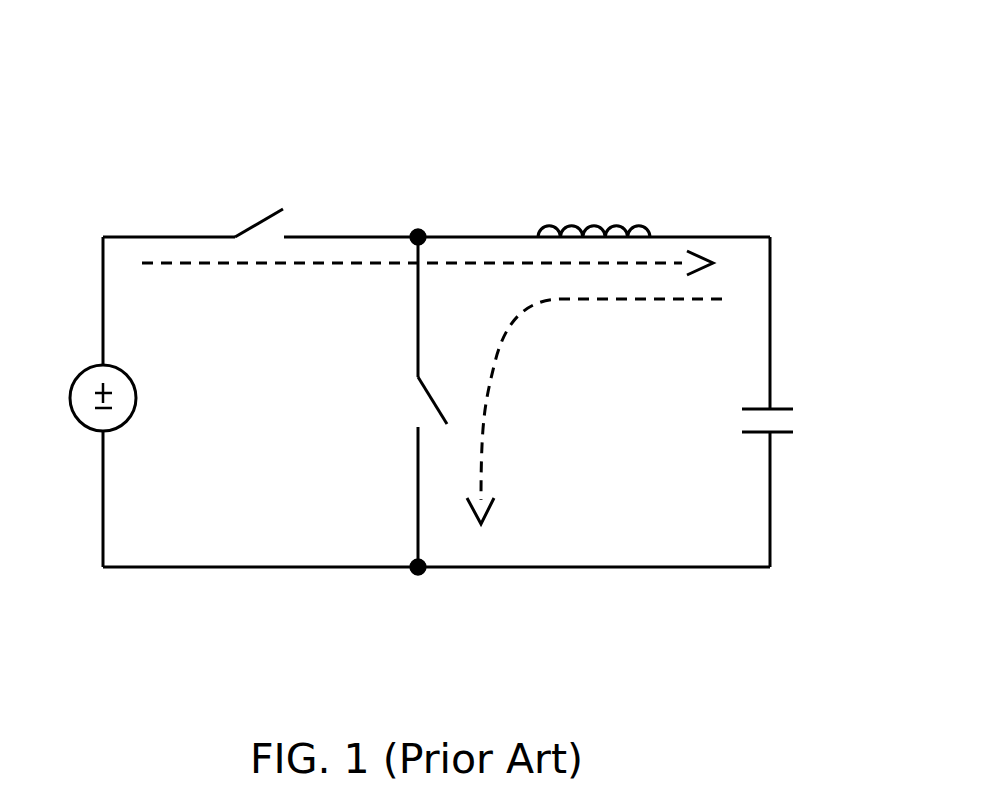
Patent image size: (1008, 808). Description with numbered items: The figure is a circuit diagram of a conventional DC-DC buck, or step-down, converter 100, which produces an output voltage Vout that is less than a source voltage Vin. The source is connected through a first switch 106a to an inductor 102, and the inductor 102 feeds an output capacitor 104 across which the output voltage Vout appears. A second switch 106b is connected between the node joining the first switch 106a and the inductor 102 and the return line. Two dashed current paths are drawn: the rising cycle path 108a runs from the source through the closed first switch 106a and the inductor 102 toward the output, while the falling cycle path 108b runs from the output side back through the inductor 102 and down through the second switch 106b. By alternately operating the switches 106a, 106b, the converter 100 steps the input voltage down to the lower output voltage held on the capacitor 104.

The DC-DC buck converter 100 is at (845, 37).
The inductor 102 is at (570, 223).
The capacitor 104 is at (783, 406).
The switch 106a is at (256, 221).
The switch 106b is at (389, 403).
The rising cycle path 108a is at (258, 264).
The falling cycle path 108b is at (512, 317).